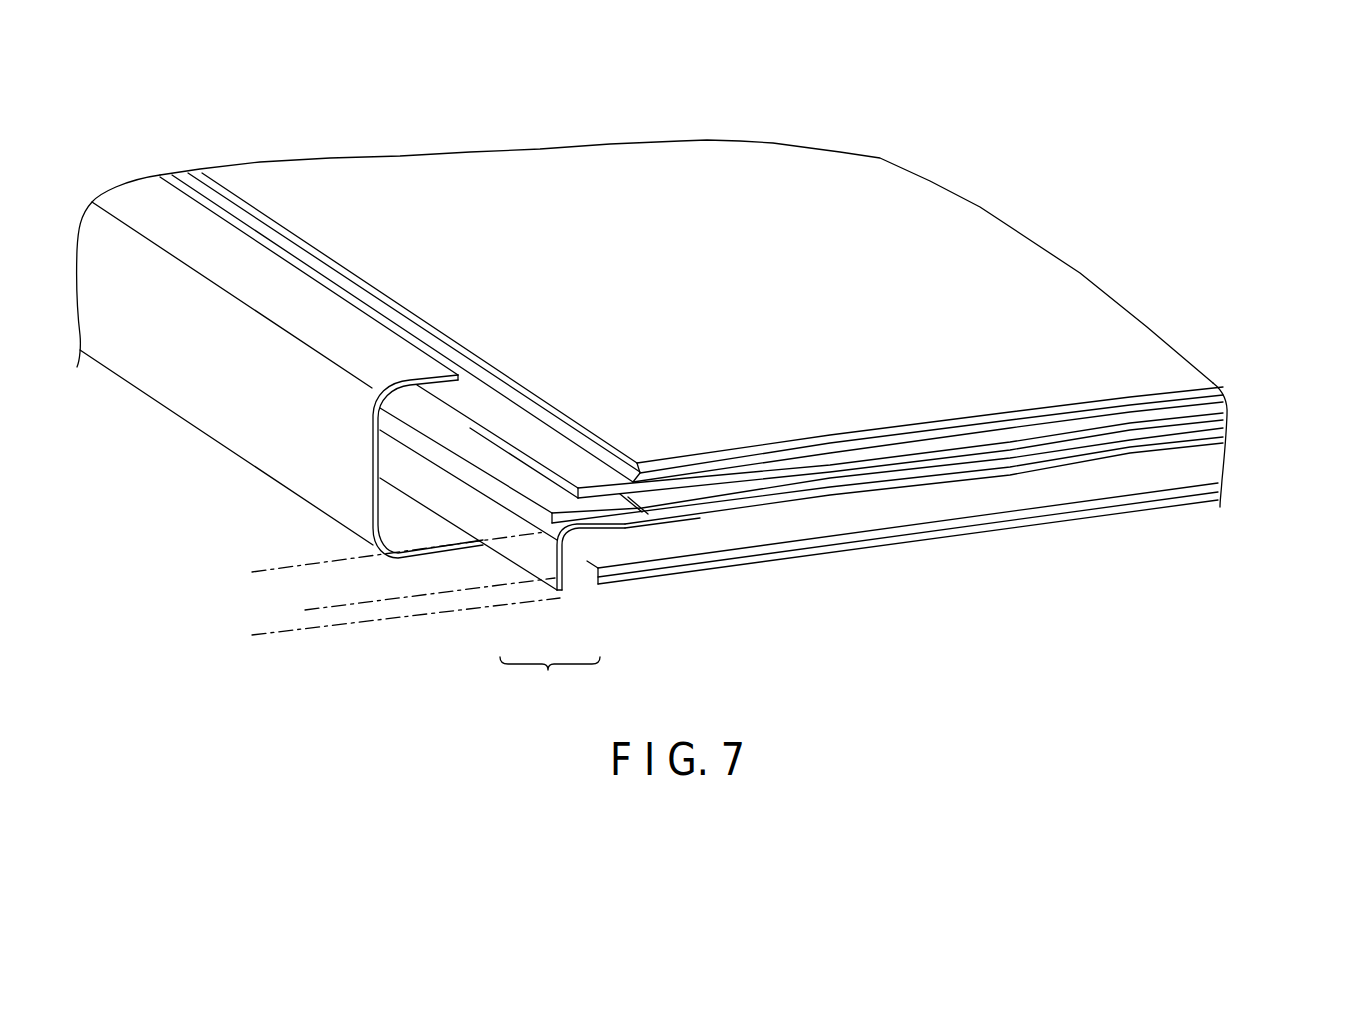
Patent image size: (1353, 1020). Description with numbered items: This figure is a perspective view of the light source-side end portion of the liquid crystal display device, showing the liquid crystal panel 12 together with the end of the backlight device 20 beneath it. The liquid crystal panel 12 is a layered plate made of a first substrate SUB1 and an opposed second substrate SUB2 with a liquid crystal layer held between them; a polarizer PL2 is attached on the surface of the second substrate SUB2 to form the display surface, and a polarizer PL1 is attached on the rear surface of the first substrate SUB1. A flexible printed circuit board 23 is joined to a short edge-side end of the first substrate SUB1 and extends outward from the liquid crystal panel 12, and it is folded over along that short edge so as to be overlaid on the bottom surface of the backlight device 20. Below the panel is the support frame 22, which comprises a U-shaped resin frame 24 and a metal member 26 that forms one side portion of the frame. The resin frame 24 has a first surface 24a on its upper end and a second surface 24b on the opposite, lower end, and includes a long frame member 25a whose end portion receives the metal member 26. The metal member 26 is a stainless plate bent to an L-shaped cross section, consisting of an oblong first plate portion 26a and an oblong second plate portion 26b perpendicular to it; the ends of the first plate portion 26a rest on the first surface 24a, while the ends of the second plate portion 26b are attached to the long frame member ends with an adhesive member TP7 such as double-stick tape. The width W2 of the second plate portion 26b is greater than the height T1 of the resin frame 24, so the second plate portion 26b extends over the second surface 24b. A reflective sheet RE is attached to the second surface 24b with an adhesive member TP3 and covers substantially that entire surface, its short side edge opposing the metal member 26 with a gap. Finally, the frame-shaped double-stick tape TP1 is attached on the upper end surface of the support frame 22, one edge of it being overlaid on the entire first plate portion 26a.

The liquid crystal panel 12 is at (846, 172).
The flexible printed circuit board 23 is at (178, 398).
The backlight device 20 is at (1076, 546).
The support frame 22 is at (779, 532).
The resin frame 24 is at (911, 510).
The first surface 24a is at (1128, 445).
The second surface 24b is at (1108, 502).
The long frame member 25a is at (960, 503).
The metal member 26 is at (550, 681).
The first plate portion 26a is at (588, 523).
The second plate portion 26b is at (533, 561).
The polarizer PL1 is at (1227, 424).
The polarizer PL2 is at (1163, 362).
The first substrate SUB1 is at (1222, 408).
The second substrate SUB2 is at (1227, 395).
The double-stick tape TP1 is at (447, 433).
The adhesive member TP3 is at (850, 545).
The adhesive member TP7 is at (618, 525).
The reflective sheet RE is at (742, 555).
The width of the second plate portion W2 is at (262, 578).
The height of the resin frame T1 is at (316, 570).